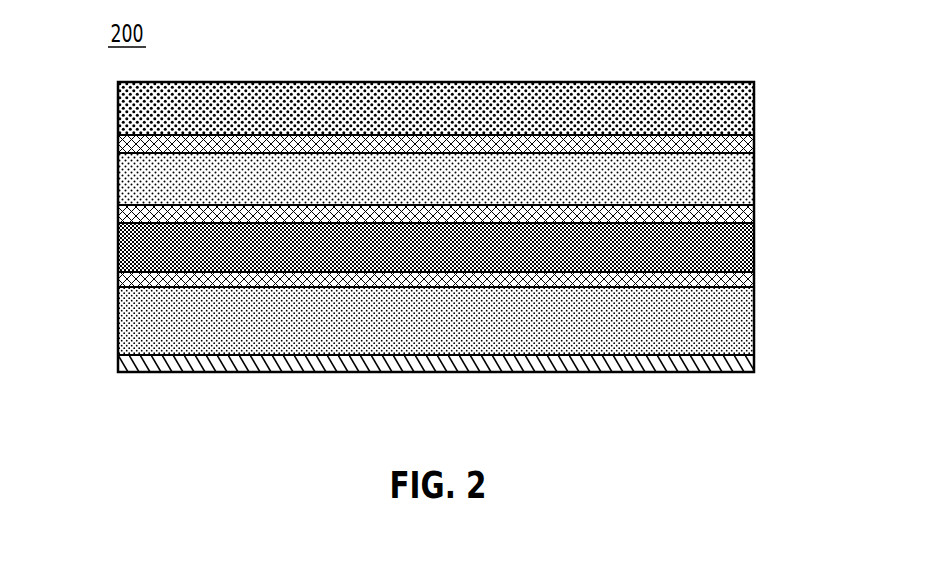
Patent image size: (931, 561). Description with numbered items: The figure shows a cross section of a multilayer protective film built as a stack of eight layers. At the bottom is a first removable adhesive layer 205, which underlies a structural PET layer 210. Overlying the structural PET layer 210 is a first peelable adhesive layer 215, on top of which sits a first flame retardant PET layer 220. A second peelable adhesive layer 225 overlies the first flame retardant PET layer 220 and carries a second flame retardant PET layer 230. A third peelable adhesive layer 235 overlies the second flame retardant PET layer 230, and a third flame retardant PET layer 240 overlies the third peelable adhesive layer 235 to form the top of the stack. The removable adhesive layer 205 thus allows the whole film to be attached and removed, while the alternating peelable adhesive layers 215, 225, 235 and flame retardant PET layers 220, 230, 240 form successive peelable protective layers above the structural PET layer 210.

The first removable adhesive layer 205 is at (757, 360).
The structural PET layer 210 is at (116, 308).
The first peelable adhesive layer 215 is at (757, 278).
The first flame retardant PET layer 220 is at (116, 240).
The second peelable adhesive layer 225 is at (757, 213).
The second flame retardant PET layer 230 is at (116, 178).
The third peelable adhesive layer 235 is at (757, 143).
The third flame retardant PET layer 240 is at (116, 103).